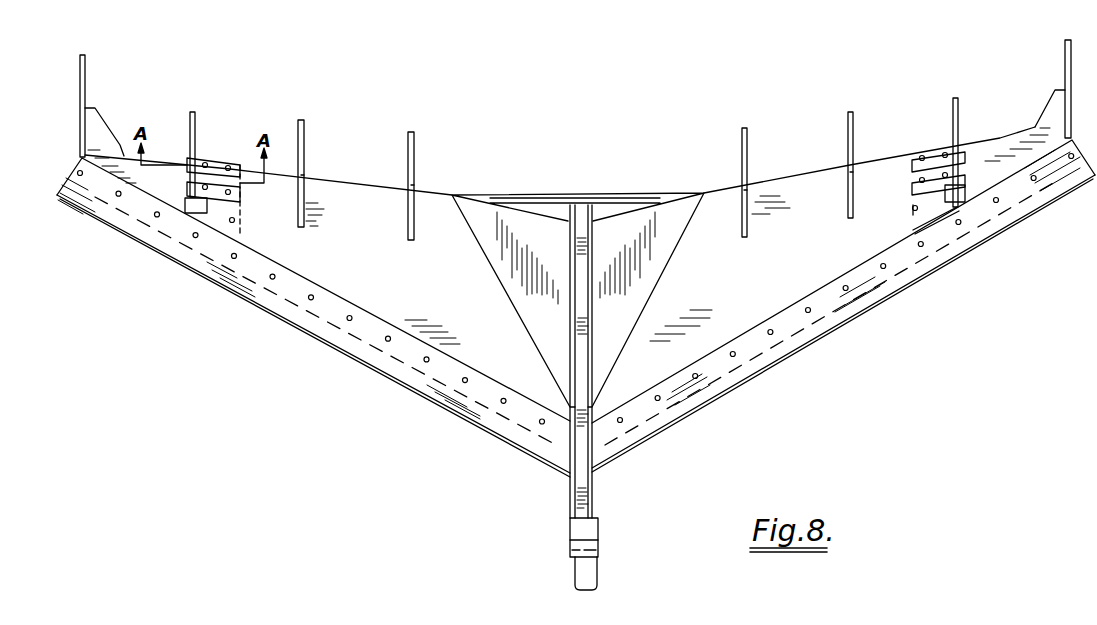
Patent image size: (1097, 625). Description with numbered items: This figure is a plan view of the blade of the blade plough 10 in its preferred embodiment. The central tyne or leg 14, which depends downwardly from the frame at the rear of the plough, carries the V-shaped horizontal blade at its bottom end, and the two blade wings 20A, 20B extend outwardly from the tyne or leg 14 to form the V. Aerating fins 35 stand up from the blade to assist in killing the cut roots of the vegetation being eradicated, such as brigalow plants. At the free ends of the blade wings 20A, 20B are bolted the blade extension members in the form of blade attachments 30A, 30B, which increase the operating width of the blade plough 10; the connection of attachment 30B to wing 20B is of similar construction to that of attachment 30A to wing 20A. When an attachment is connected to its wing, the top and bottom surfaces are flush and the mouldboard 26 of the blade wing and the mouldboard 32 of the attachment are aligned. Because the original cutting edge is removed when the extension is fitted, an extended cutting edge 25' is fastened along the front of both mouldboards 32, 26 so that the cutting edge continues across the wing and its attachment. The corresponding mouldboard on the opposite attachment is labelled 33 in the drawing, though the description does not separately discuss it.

The blade plough 10 is at (710, 106).
The central tyne or leg 14 is at (578, 500).
The blade wing 20A is at (390, 254).
The blade wing 20B is at (826, 251).
The extended cutting edge 25' is at (576, 326).
The mouldboard 26 is at (373, 328).
The blade attachment 30A is at (150, 70).
The blade attachment 30B is at (1025, 148).
The mouldboard 32 is at (138, 200).
The right wear strip 33 is at (1022, 190).
The aerating fins 35 is at (411, 132).